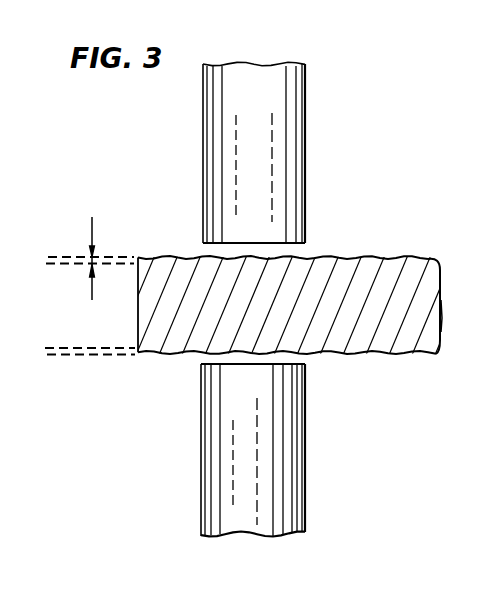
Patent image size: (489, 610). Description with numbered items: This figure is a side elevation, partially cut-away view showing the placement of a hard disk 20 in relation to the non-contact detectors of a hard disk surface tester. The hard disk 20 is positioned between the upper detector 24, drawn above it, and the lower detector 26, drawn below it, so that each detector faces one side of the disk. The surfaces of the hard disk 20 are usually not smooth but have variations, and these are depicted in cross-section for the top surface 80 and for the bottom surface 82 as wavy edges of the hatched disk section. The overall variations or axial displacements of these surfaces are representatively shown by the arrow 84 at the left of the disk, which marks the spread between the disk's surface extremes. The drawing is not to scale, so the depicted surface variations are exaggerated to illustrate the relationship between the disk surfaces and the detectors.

The hard disk 20 is at (272, 303).
The upper detector 24 is at (306, 131).
The lower detector 26 is at (307, 428).
The top surface 80 is at (388, 233).
The bottom surface 82 is at (372, 354).
The arrow 84 is at (92, 217).